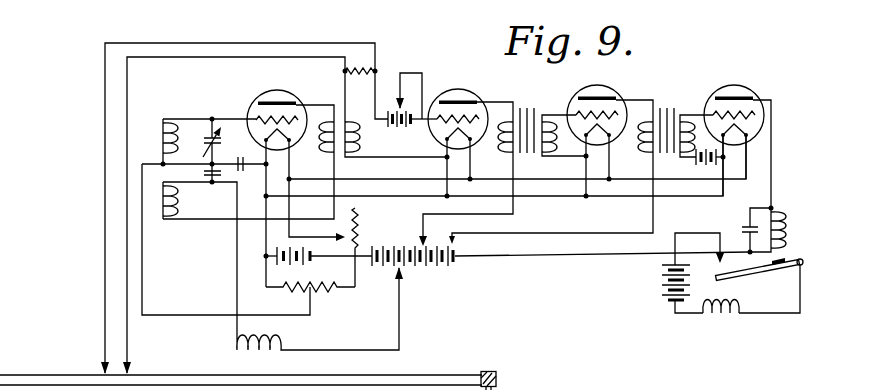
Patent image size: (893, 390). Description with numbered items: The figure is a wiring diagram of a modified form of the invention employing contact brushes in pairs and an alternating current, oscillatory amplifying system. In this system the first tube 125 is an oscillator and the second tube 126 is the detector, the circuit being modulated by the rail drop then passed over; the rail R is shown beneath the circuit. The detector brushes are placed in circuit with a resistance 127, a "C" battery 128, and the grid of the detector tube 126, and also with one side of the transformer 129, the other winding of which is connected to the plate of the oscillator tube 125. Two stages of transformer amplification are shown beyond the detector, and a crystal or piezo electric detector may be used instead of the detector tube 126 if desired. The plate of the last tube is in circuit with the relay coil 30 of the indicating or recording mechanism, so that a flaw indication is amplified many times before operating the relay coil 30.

The first tube 125 is at (311, 62).
The second tube 126 is at (458, 105).
The resistance 127 is at (367, 69).
The "C" battery 128 is at (412, 114).
The transformer 129 is at (346, 151).
The relay coil 30 is at (791, 223).
The rail R is at (248, 365).